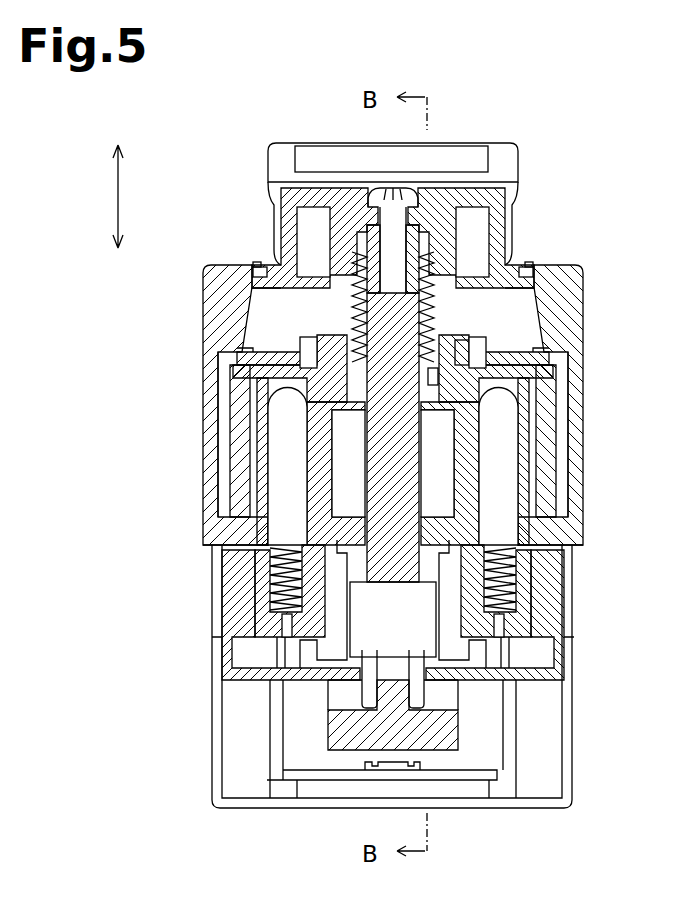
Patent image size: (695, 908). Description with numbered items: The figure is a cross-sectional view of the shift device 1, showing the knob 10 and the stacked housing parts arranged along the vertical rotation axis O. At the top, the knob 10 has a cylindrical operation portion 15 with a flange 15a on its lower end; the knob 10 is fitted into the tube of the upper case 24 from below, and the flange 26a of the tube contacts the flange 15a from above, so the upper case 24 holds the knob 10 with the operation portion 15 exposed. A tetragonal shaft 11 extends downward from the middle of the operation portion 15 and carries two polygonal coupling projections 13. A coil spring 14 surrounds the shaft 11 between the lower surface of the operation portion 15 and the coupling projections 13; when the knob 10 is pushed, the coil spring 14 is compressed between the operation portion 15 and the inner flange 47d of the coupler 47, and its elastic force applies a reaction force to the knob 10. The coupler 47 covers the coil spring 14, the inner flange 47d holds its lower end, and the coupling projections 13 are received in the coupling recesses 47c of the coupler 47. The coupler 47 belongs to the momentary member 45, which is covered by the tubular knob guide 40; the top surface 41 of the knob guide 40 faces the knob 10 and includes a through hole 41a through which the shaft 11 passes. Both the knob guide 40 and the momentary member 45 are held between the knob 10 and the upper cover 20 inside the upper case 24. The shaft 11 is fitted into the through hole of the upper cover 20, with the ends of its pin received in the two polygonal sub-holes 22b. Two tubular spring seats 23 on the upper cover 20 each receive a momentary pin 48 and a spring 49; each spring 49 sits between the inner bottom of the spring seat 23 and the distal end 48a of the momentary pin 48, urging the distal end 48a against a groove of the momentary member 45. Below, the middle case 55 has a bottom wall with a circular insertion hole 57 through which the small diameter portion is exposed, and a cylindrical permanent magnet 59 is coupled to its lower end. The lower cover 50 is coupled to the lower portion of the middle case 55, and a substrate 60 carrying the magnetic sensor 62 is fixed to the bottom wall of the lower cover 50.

The shift device 1 is at (610, 109).
The knob 10 is at (560, 156).
The shaft 11 is at (372, 306).
The coupling projections 13 is at (347, 390).
The coil spring 14 is at (421, 268).
The operation portion 15 is at (325, 152).
The flange 15a is at (268, 288).
The upper cover 20 is at (637, 545).
The sub-holes 22b is at (360, 498).
The spring seats 23 is at (258, 470).
The upper case 24 is at (553, 267).
The flange 26a is at (258, 265).
The knob guide 40 is at (552, 430).
The top surface 41 is at (556, 360).
The through hole 41a is at (452, 350).
The momentary member 45 is at (622, 402).
The coupler 47 is at (338, 352).
The coupling recesses 47c is at (308, 345).
The inner flange 47d is at (433, 378).
The momentary pins 48 is at (486, 460).
The distal end 48a is at (340, 410).
The spring 49 is at (484, 604).
The lower cover 50 is at (624, 748).
The middle case 55 is at (619, 685).
The insertion hole 57 is at (420, 687).
The permanent magnet 59 is at (446, 740).
The substrate 60 is at (498, 778).
The magnetic sensor 62 is at (388, 772).
The rotation axis O is at (118, 196).